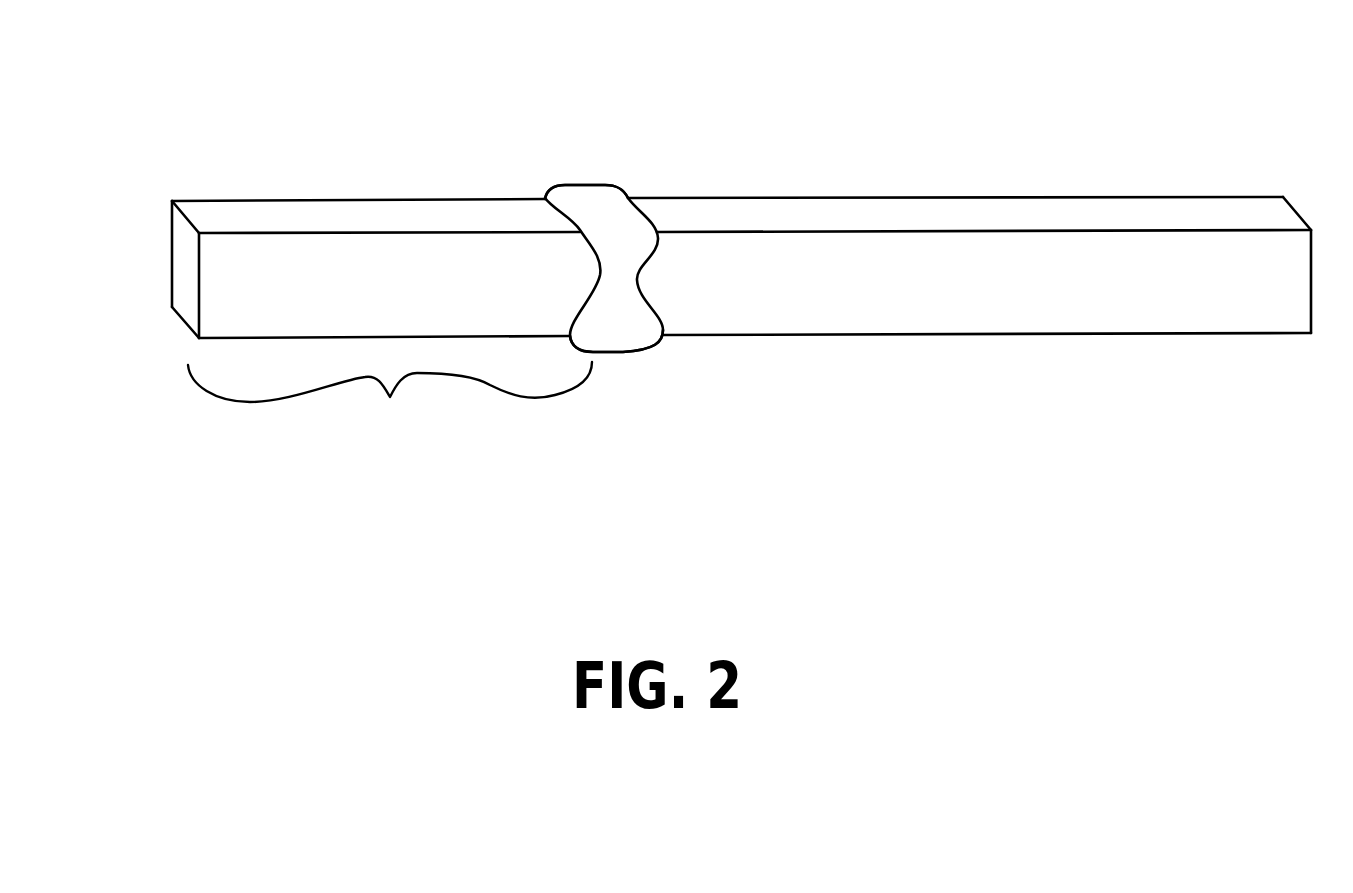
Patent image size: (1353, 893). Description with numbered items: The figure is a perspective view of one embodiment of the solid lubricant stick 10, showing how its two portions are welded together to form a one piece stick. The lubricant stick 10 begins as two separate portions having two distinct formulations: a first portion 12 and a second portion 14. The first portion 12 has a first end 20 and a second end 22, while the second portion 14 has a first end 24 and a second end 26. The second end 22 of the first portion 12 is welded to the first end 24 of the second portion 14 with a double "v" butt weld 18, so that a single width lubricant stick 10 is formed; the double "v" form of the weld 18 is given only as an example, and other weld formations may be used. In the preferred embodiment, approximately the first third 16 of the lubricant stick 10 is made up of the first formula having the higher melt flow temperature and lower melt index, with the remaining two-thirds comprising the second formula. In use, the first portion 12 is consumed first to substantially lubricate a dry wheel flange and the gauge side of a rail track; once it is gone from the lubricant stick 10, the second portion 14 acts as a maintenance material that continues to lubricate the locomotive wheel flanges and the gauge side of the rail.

The lubricant stick 10 is at (963, 150).
The first portion 12 is at (298, 210).
The second portion 14 is at (1113, 196).
The first third 16 is at (390, 398).
The double "v" butt weld 18 is at (625, 352).
The first end 20 is at (192, 273).
The second end 22 is at (545, 200).
The first end 24 is at (657, 348).
The second end 26 is at (1311, 273).